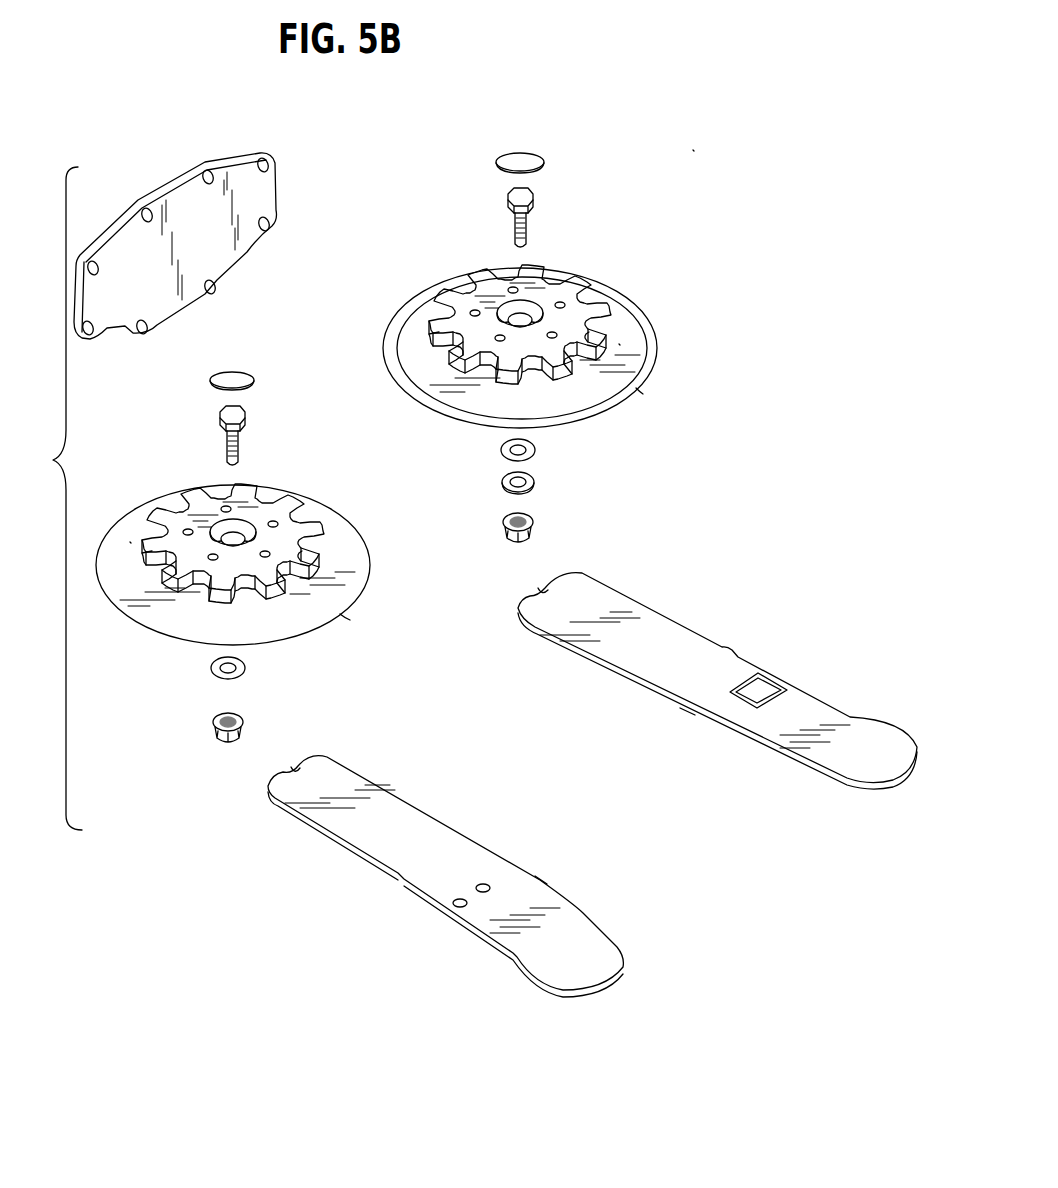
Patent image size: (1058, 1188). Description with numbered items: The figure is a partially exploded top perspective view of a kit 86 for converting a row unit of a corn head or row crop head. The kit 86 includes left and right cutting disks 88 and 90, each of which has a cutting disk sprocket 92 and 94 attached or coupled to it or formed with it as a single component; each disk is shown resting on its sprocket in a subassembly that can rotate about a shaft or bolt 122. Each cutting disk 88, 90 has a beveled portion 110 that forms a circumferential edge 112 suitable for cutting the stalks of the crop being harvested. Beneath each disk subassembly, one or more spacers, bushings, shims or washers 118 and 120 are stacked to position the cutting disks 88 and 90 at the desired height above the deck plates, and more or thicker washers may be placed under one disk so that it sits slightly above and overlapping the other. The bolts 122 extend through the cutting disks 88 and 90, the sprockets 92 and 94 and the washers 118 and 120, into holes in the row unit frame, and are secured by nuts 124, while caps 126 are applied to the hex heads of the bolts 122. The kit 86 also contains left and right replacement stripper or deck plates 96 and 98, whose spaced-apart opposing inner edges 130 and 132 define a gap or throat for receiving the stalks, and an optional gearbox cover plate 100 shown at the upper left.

The kit 86 is at (694, 152).
The left cutting disk 88 is at (617, 345).
The right cutting disk 90 is at (133, 544).
The cutting disk sprocket 92 is at (575, 283).
The cutting disk sprocket 94 is at (200, 500).
The left replacement deck plate 96 is at (693, 666).
The right replacement deck plate 98 is at (438, 858).
The gearbox cover plate 100 is at (215, 258).
The beveled portion 110 is at (300, 645).
The circumferential edge 112 is at (343, 615).
The washer 118 is at (213, 672).
The washer 120 is at (535, 485).
The bolt 122 is at (241, 449).
The nut 124 is at (220, 742).
The cap 126 is at (236, 378).
The inner edge 130 is at (687, 713).
The inner edge 132 is at (540, 877).